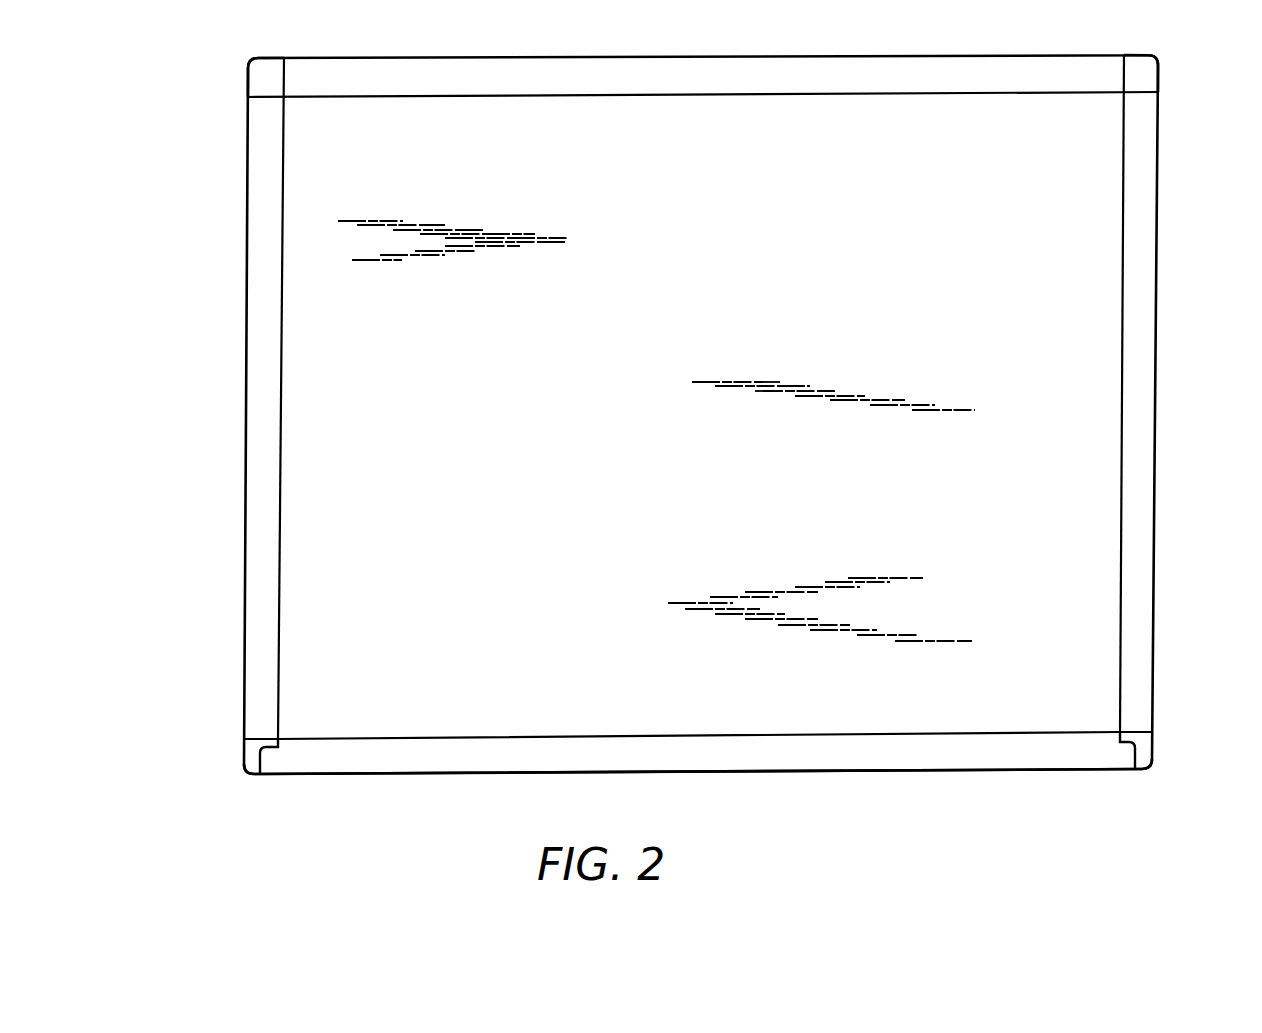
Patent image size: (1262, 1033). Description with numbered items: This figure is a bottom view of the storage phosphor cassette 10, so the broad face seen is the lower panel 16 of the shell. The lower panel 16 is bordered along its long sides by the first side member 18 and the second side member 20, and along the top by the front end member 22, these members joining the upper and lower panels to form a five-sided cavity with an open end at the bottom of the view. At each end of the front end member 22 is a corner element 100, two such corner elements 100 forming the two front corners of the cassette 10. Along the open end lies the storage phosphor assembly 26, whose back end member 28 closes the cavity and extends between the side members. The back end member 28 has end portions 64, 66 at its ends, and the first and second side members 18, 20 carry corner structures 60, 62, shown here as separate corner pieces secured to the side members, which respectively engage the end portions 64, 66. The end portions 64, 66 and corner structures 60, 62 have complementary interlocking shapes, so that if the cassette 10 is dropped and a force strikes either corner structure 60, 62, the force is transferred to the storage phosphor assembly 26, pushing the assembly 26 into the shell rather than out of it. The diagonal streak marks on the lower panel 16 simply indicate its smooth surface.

The storage phosphor cassette 10 is at (237, 308).
The lower panel 16 is at (1100, 585).
The first side member 18 is at (1148, 488).
The second side member 20 is at (255, 565).
The front end member 22 is at (917, 80).
The storage phosphor assembly 26 is at (955, 770).
The back end member 28 is at (895, 762).
The corner structure 60 is at (242, 767).
The corner structure 62 is at (1150, 752).
The end portion 64 is at (272, 765).
The end portion 66 is at (1127, 760).
The corner element 100 is at (262, 77).